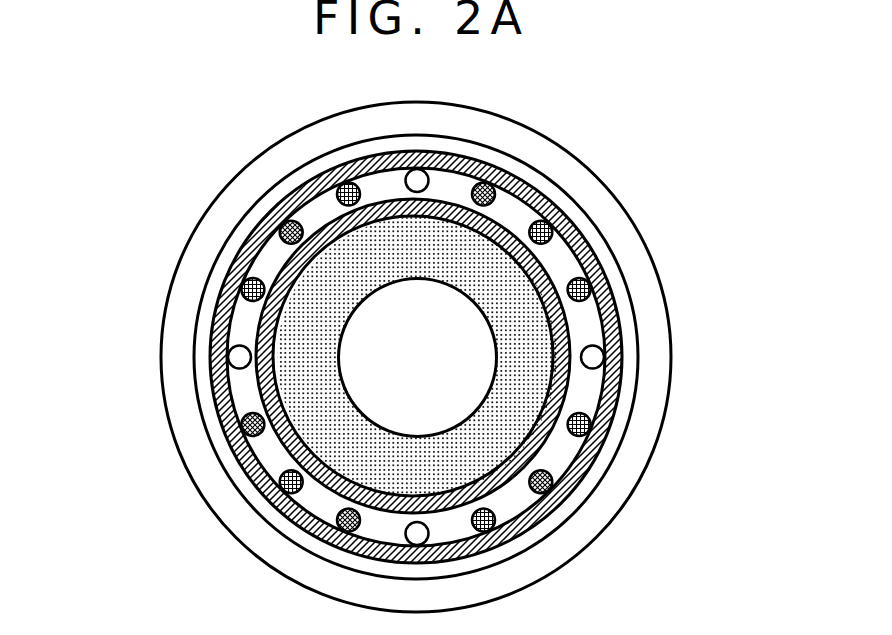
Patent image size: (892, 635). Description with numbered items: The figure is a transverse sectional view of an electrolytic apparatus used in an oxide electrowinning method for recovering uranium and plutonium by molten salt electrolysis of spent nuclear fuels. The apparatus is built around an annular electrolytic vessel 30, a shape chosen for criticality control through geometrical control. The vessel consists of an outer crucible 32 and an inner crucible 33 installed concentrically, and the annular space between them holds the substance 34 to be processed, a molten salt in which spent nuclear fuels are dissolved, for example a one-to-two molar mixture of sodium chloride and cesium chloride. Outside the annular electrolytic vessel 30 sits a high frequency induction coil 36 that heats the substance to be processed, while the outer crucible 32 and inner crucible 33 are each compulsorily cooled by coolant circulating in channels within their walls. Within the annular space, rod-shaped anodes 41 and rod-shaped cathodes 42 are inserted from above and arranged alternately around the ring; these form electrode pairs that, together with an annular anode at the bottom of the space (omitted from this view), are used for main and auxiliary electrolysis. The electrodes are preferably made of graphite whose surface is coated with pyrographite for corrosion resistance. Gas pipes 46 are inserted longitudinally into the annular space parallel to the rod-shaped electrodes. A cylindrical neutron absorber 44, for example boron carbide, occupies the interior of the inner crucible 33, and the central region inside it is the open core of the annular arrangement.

The annular electrolytic vessel 30 is at (320, 172).
The outer crucible 32 is at (213, 313).
The inner crucible 33 is at (265, 393).
The substance to be processed 34 is at (265, 458).
The high frequency induction coil 36 is at (227, 200).
The rod-shaped anodes 41 is at (553, 225).
The rod-shaped cathodes 42 is at (492, 182).
The cylindrical neutron absorber 44 is at (347, 465).
The gas pipes 46 is at (593, 355).